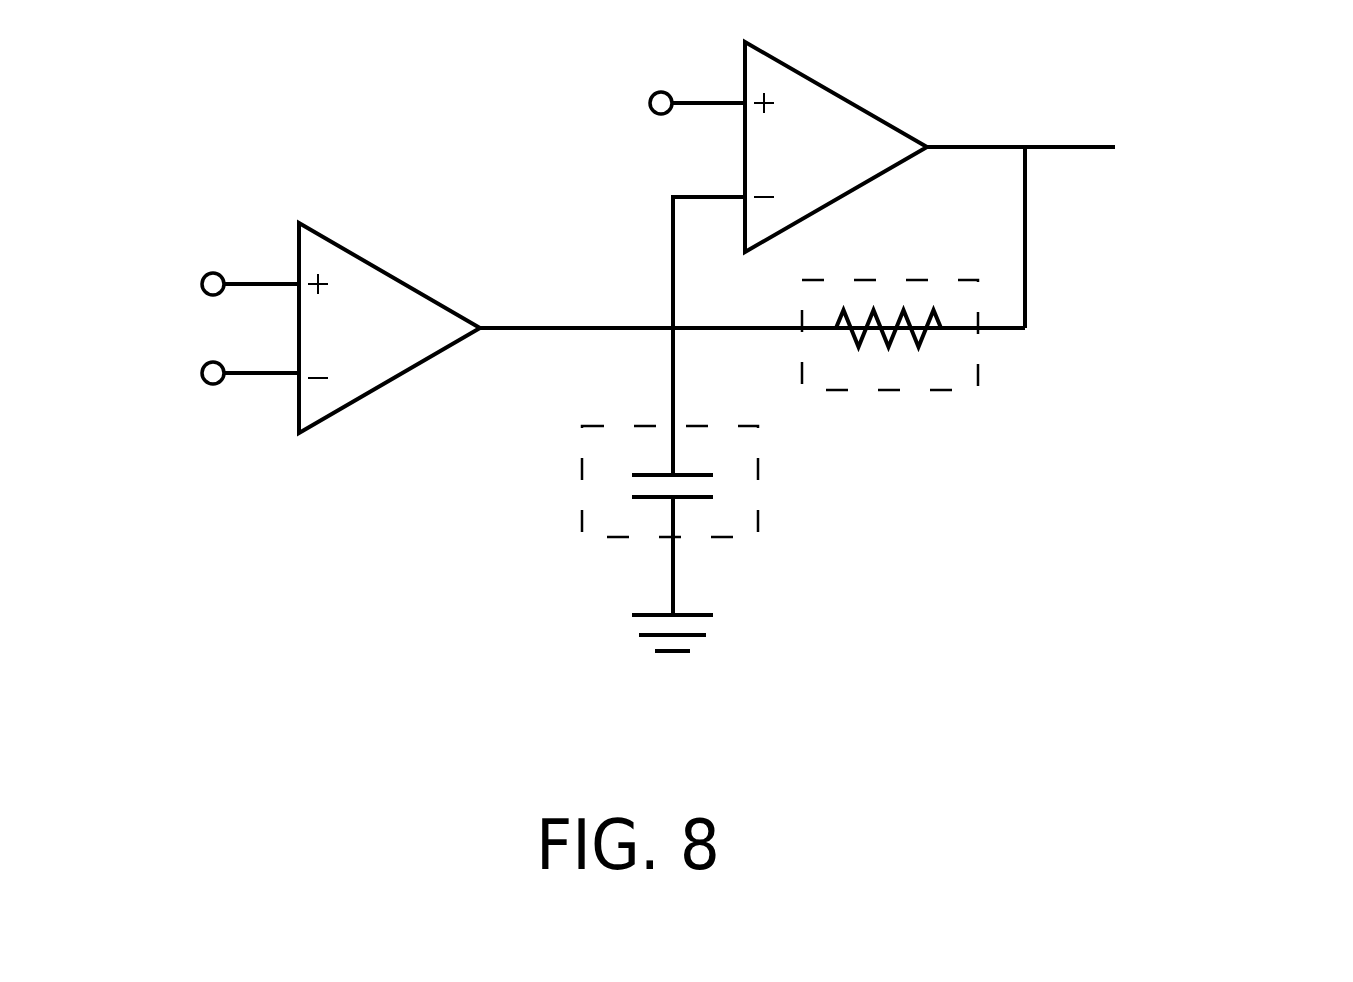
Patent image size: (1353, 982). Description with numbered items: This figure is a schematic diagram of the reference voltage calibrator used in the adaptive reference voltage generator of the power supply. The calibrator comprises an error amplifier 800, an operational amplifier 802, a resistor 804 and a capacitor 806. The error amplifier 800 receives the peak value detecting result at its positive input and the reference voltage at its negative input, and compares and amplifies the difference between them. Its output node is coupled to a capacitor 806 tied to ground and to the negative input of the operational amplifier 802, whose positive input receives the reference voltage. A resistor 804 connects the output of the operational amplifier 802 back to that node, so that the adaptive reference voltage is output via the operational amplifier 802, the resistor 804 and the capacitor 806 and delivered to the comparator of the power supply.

The error amplifier 800 is at (392, 272).
The operational amplifier 802 is at (837, 90).
The resistor 804 is at (960, 390).
The capacitor 806 is at (740, 537).